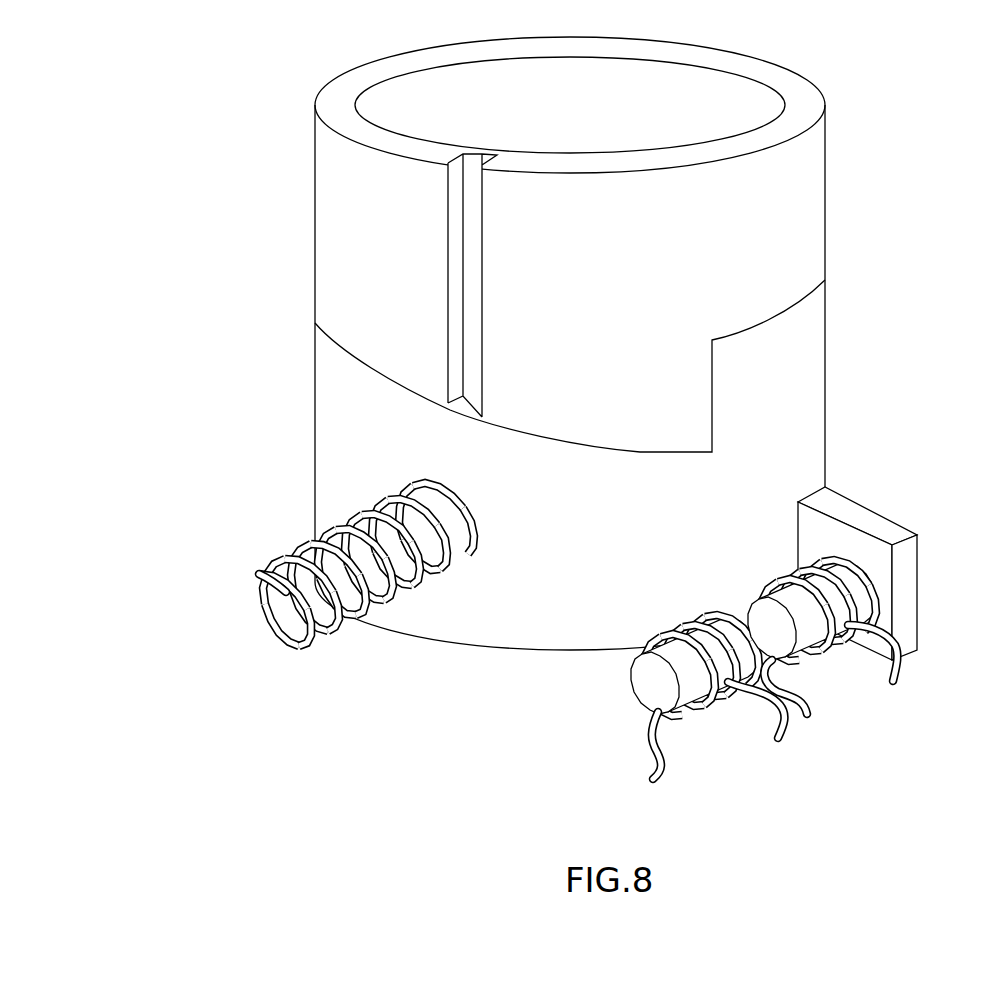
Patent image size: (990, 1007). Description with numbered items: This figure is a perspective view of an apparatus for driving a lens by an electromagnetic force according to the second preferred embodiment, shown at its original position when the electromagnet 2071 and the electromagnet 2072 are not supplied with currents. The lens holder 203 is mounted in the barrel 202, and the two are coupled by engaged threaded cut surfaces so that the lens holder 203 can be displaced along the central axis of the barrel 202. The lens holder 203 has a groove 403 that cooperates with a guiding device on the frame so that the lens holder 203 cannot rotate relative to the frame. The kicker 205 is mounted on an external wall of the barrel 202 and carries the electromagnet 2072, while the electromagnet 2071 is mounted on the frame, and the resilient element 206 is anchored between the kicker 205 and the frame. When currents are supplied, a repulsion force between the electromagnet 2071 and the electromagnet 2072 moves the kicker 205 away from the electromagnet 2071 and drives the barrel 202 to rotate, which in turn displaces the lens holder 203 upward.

The lens holder 203 is at (792, 176).
The groove 403 is at (458, 235).
The barrel 202 is at (463, 575).
The resilient element 206 is at (243, 605).
The kicker 205 is at (908, 537).
The electromagnet 2071 is at (688, 712).
The electromagnet 2072 is at (805, 652).